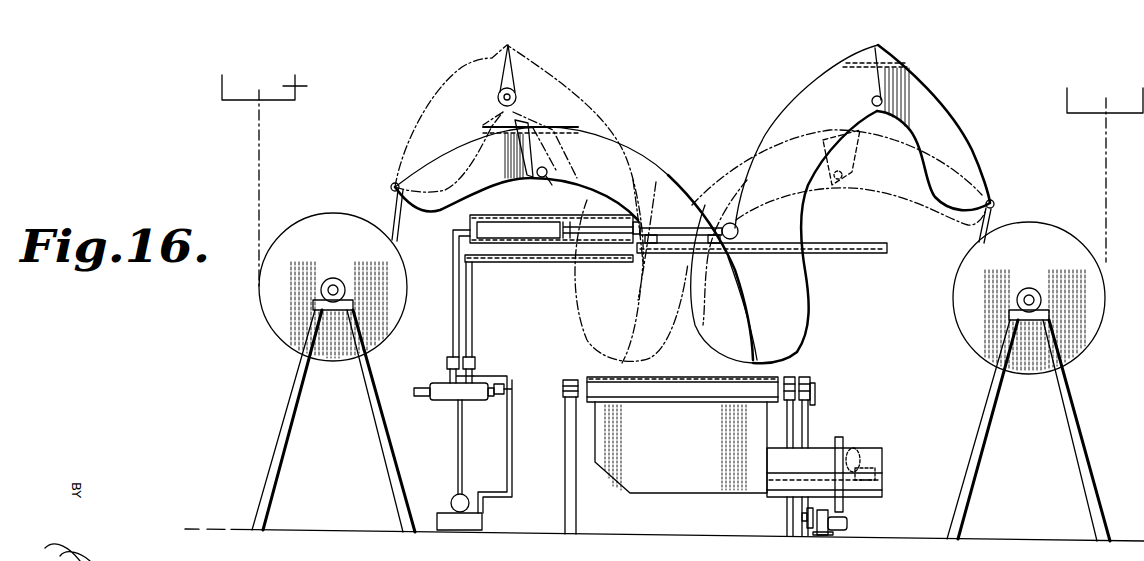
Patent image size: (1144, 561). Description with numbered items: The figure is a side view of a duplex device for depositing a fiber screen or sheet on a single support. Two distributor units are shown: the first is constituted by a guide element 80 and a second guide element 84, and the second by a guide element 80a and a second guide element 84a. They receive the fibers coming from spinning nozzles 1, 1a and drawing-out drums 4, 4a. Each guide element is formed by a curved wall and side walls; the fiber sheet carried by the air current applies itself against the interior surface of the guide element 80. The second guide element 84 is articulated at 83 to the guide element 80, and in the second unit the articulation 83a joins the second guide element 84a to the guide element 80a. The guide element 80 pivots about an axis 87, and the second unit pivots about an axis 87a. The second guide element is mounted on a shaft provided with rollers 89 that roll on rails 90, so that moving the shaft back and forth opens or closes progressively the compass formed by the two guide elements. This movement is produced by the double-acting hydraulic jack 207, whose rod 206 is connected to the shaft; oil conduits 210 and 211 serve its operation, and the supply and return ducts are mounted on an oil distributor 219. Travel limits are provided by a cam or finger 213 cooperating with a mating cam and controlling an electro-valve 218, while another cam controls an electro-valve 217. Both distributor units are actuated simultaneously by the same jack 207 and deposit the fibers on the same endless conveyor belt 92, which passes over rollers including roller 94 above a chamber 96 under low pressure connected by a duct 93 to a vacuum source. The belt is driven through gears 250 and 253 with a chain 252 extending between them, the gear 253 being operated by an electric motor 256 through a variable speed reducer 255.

The spinning nozzle 1 is at (276, 88).
The spinning nozzle 1a is at (1098, 103).
The drawing-out drum 4 is at (278, 299).
The drawing-out drum 4a is at (966, 302).
The guide element 80 is at (480, 197).
The guide element 80a is at (962, 115).
The articulation 83 is at (547, 178).
The articulation 83a is at (880, 115).
The second guide element 84 is at (646, 152).
The second guide element 84a is at (788, 107).
The axis 87 is at (392, 186).
The axis 87a is at (994, 204).
The roller 89 is at (740, 229).
The rail 90 is at (846, 253).
The endless conveyor belt 92 is at (690, 370).
The duct 93 is at (827, 462).
The roller 94 is at (616, 388).
The chamber 96 is at (672, 467).
The rod 206 is at (690, 222).
The hydraulic jack 207 is at (521, 246).
The oil conduit 210 is at (458, 309).
The oil conduit 211 is at (468, 320).
The cam or finger 213 is at (658, 241).
The electro-valve 217 is at (500, 385).
The electro-valve 218 is at (438, 400).
The oil distributor 219 is at (444, 378).
The gear 250 is at (815, 382).
The chain 252 is at (816, 412).
The gear 253 is at (806, 519).
The variable speed reducer 255 is at (817, 534).
The electric motor 256 is at (850, 522).